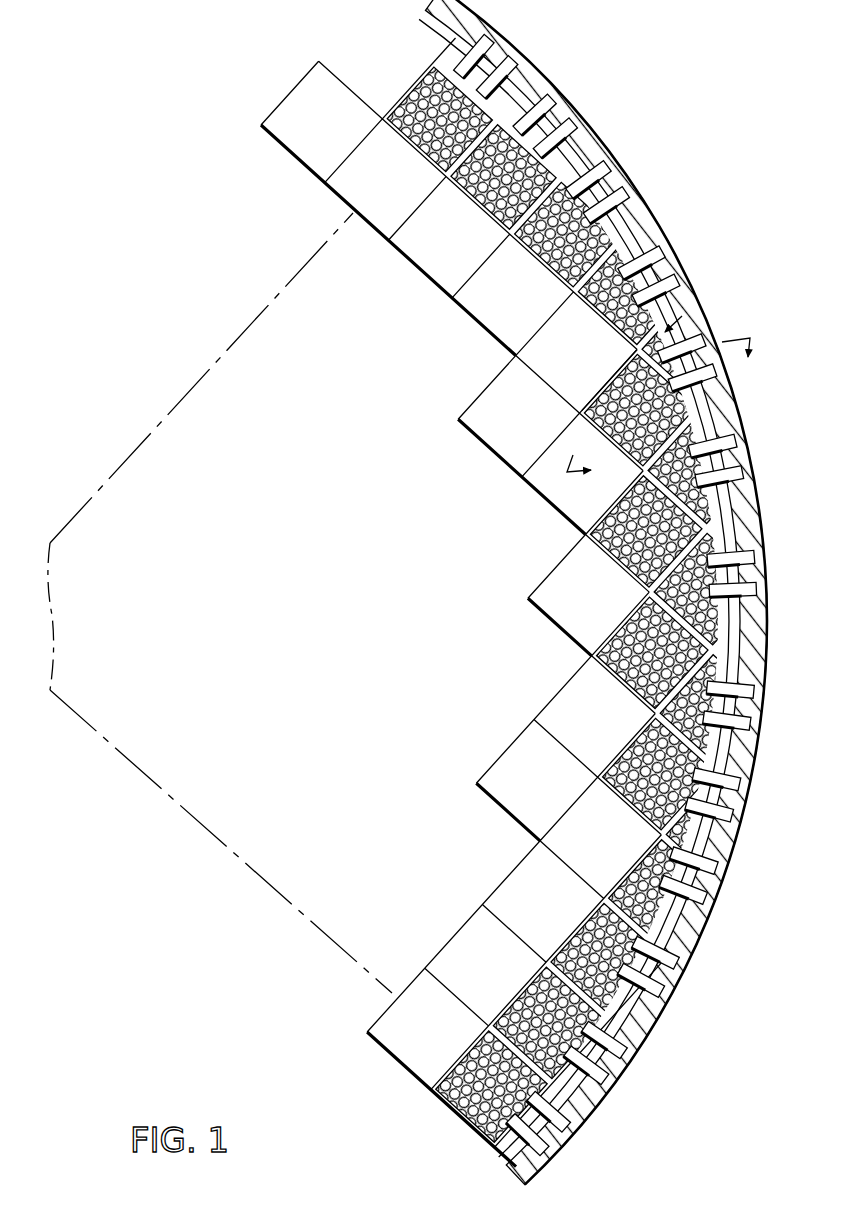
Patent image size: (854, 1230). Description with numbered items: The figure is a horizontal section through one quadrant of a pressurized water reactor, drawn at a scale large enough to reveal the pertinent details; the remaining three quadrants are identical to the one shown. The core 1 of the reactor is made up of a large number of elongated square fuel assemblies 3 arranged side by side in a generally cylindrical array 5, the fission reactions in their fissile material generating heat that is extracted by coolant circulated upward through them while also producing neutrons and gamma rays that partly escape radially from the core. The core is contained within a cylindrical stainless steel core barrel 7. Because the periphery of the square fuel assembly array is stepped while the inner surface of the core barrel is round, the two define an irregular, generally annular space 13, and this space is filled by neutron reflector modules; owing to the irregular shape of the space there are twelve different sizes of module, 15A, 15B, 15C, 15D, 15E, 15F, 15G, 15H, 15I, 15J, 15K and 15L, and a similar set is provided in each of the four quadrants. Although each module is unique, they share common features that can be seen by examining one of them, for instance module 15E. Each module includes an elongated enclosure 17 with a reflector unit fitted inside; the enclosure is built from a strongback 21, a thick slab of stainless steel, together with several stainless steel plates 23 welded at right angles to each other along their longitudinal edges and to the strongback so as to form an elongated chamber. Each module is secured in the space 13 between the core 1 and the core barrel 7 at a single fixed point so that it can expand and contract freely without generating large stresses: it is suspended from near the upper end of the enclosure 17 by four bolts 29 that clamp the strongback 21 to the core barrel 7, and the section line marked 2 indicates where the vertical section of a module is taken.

The core 1 is at (212, 297).
The section line 2- 2 is at (662, 404).
The fuel assembly 3 is at (420, 249).
The cylindrical array 5 is at (306, 595).
The core barrel 7 is at (655, 1022).
The annular space 13 is at (388, 82).
The reflector module 15A is at (525, 62).
The reflector module 15B is at (588, 136).
The reflector module 15C is at (610, 152).
The reflector module 15D is at (652, 232).
The reflector module 15E is at (678, 325).
The reflector module 15F is at (745, 456).
The reflector module 15G is at (737, 520).
The reflector module 15H is at (718, 672).
The reflector module 15I is at (708, 777).
The reflector module 15J is at (700, 870).
The reflector module 15K is at (688, 958).
The reflector module 15L is at (612, 1075).
The enclosure 17 is at (653, 340).
The strongback 21 is at (693, 398).
The stainless steel plate 23 is at (597, 392).
The bolt 29 is at (733, 443).